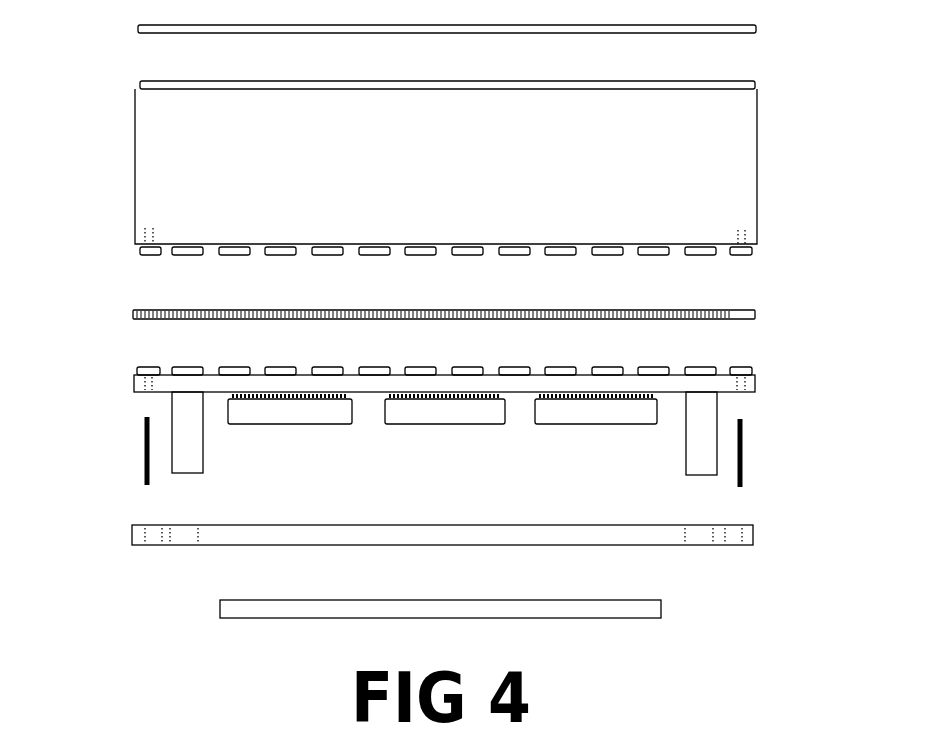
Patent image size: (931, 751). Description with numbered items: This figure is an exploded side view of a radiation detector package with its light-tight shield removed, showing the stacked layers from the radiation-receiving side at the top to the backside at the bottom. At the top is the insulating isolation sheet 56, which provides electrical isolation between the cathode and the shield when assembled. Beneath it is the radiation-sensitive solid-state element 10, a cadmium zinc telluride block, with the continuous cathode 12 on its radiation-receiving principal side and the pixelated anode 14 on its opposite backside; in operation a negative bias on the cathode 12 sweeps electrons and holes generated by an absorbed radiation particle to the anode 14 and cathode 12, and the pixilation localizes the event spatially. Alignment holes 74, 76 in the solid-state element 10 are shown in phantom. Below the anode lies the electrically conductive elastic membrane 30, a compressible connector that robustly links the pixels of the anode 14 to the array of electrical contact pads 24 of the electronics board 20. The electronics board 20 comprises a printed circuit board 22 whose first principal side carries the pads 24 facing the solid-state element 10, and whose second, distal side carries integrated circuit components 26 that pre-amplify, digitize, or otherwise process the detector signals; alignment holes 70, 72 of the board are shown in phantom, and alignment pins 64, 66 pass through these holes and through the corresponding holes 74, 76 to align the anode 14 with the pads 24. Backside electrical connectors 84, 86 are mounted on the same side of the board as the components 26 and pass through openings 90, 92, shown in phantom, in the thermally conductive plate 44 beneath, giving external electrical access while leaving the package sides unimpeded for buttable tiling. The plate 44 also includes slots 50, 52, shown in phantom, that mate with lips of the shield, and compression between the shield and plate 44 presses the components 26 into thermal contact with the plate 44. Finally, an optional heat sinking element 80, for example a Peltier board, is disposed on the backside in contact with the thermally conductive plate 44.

The radiation-sensitive solid-state element 10 is at (411, 179).
The cathode 12 is at (625, 81).
The pixelated anode 14 is at (640, 256).
The electronics board 20 is at (55, 355).
The printed circuit board 22 is at (367, 393).
The array of electrical contact pads 24 is at (635, 372).
The integrated circuit components 26 is at (477, 413).
The electrically conductive elastic membrane 30 is at (728, 310).
The thermally conductive plate 44 is at (422, 527).
The slot 50 is at (155, 541).
The slot 52 is at (733, 546).
The insulating isolation sheet 56 is at (540, 25).
The alignment pin 64 is at (146, 455).
The alignment pin 66 is at (745, 445).
The alignment hole 70 is at (145, 393).
The alignment hole 72 is at (742, 394).
The alignment hole 74 is at (153, 256).
The alignment hole 76 is at (735, 257).
The heat sinking element 80 is at (630, 610).
The backside electrical connector 84 is at (197, 450).
The backside electrical connector 86 is at (692, 455).
The opening 90 is at (184, 541).
The opening 92 is at (697, 541).